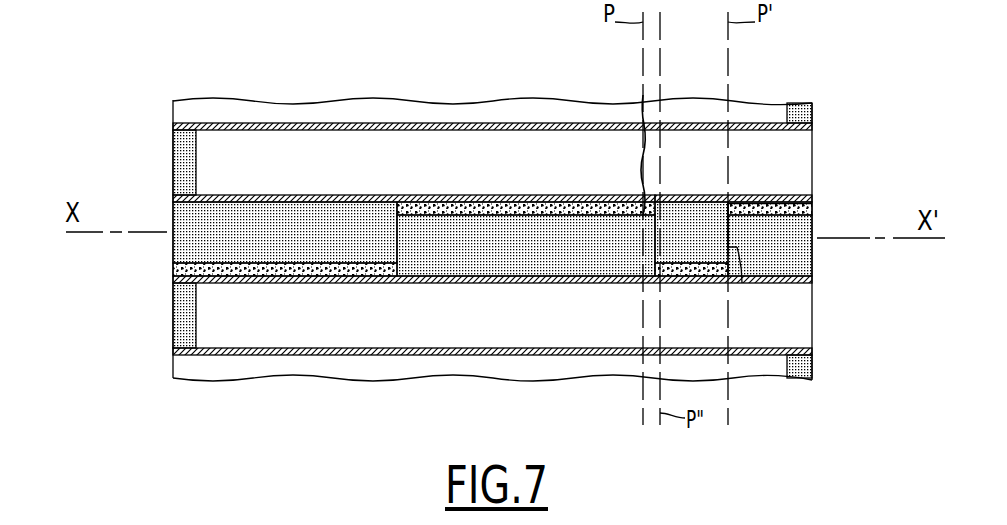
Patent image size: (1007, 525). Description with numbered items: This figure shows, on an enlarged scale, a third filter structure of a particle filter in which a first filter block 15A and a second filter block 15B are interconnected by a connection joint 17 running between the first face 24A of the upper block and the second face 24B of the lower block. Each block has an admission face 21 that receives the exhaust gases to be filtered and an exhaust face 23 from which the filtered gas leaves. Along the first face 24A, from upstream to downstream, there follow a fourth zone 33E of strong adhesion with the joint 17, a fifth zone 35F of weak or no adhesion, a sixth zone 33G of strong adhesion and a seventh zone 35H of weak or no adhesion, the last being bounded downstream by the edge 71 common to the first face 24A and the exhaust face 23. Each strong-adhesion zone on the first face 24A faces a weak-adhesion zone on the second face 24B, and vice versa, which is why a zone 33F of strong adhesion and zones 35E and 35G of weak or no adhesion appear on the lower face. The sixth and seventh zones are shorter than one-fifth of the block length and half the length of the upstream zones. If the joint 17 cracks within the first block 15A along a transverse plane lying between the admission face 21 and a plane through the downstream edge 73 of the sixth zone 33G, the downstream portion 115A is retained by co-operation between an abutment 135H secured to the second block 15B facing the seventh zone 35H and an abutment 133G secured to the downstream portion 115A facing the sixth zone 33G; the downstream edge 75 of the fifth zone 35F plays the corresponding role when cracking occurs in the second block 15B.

The first filter block 15A is at (100, 130).
The second filter block 15B is at (120, 276).
The admission face 21 is at (173, 118).
The exhaust face 23 is at (812, 163).
The first face 24A is at (232, 194).
The second face 24B is at (418, 283).
The downstream portion 115A is at (775, 103).
The connection joint 17 is at (195, 228).
The fourth zone of strong adhesion 33E is at (343, 196).
The electrode layer 33F is at (545, 283).
The sixth zone of strong adhesion 33G is at (685, 201).
The alignment layer 35E is at (300, 270).
The fifth zone of weak or no adhesion 35F is at (495, 212).
The alignment layer 35G is at (678, 283).
The seventh zone of weak or no adhesion 35H is at (812, 225).
The abutment 135H is at (812, 268).
The edge 71 is at (812, 213).
The downstream edge of the sixth zone 73 is at (728, 200).
The downstream edge of the fifth zone 75 is at (652, 198).
The abutment 133G is at (742, 283).